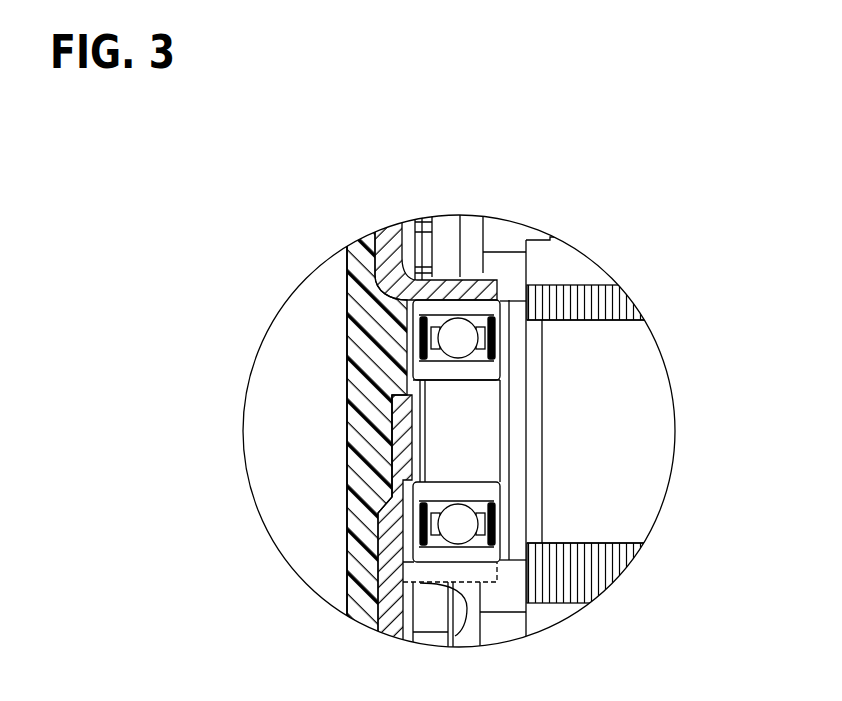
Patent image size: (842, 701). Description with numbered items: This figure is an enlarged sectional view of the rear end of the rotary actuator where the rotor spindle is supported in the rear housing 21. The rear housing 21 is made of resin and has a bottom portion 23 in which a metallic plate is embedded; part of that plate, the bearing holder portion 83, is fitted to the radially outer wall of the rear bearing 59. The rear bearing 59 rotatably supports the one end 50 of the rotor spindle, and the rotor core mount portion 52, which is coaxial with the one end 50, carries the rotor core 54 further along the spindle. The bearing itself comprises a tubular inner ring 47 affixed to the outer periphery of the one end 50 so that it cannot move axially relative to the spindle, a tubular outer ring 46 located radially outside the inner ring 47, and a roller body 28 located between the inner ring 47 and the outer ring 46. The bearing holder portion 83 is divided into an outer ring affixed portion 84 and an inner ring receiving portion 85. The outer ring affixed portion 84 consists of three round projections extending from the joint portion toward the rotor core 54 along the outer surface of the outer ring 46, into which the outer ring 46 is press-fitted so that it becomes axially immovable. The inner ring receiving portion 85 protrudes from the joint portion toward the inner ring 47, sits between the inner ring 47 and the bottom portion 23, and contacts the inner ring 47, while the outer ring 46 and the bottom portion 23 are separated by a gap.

The rear housing 21 is at (343, 604).
The bottom portion 23 is at (358, 552).
The roller body 28 is at (452, 340).
The outer ring 46 is at (435, 308).
The inner ring 47 is at (427, 370).
The one end 50 is at (487, 400).
The rotor core mount portion 52 is at (612, 440).
The rotor core 54 is at (583, 585).
The rear bearing 59 is at (323, 340).
The bearing holder portion 83 is at (386, 445).
The outer ring affixed portion 84 is at (448, 288).
The inner ring receiving portion 85 is at (400, 478).